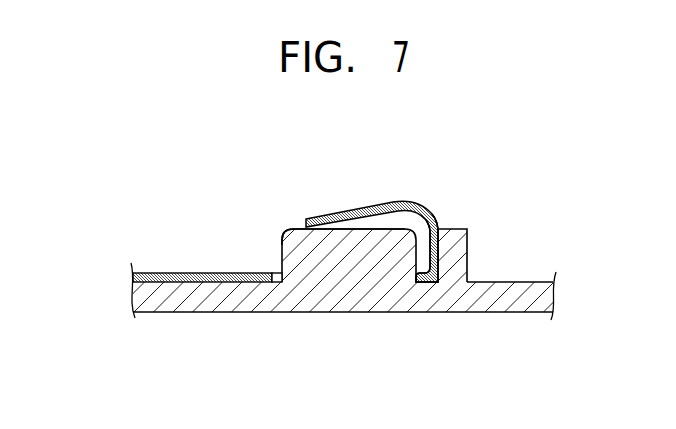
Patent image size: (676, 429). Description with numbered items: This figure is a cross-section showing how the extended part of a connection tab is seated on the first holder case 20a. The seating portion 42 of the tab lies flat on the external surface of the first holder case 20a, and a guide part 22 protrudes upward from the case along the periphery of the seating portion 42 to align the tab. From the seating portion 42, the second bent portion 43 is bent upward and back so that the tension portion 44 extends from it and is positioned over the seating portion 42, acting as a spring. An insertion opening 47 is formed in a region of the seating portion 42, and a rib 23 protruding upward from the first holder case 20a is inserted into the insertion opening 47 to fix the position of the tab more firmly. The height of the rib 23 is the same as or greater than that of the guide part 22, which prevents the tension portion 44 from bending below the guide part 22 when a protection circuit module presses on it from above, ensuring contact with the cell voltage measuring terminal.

The first holder case 20a is at (227, 313).
The guide part 22 is at (467, 252).
The rib 23 is at (302, 227).
The seating portion 42 is at (203, 274).
The second bent portion 43 is at (432, 213).
The tension portion 44 is at (348, 211).
The insertion opening 47 is at (279, 272).